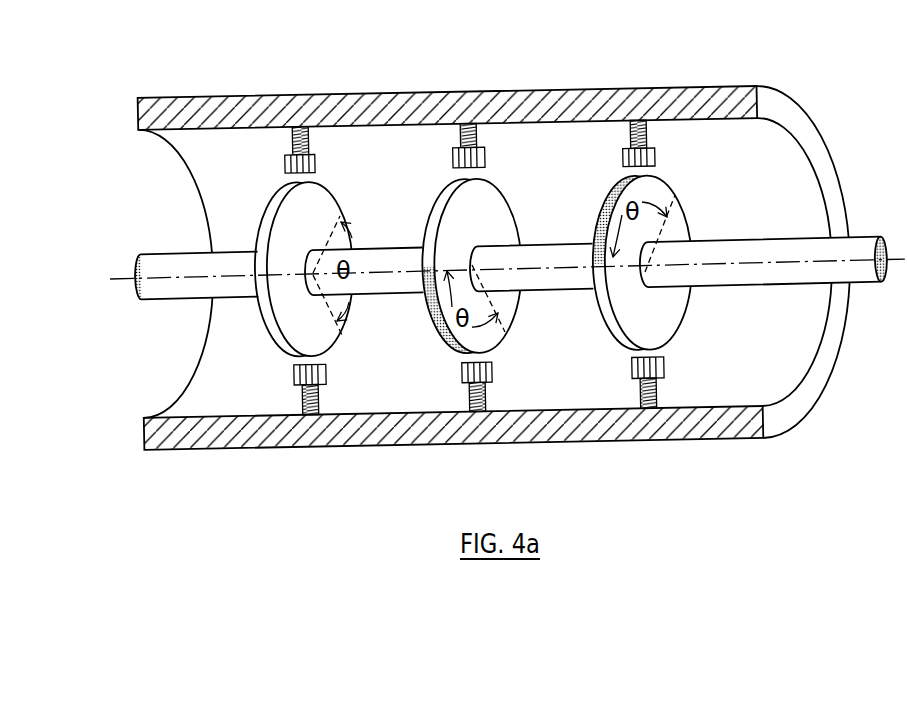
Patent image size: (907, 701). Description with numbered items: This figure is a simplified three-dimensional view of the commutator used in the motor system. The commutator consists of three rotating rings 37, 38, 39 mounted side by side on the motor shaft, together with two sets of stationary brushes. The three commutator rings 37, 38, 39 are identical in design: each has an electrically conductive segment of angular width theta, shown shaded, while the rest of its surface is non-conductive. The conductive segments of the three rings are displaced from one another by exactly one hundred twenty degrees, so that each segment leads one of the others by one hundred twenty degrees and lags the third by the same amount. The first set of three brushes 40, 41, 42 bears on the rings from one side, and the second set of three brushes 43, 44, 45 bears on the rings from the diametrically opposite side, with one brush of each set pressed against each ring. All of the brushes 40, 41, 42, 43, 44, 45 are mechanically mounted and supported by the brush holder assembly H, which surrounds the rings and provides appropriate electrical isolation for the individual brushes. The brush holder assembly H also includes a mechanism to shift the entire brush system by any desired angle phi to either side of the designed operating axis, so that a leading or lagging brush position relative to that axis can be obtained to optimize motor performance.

The brush holder assembly H is at (799, 100).
The rotating commutator ring 37 is at (673, 188).
The rotating commutator ring 38 is at (505, 194).
The rotating commutator ring 39 is at (342, 199).
The brush 40 is at (663, 158).
The brush 41 is at (492, 158).
The brush 42 is at (320, 159).
The brush 43 is at (667, 372).
The brush 44 is at (496, 373).
The brush 45 is at (330, 378).